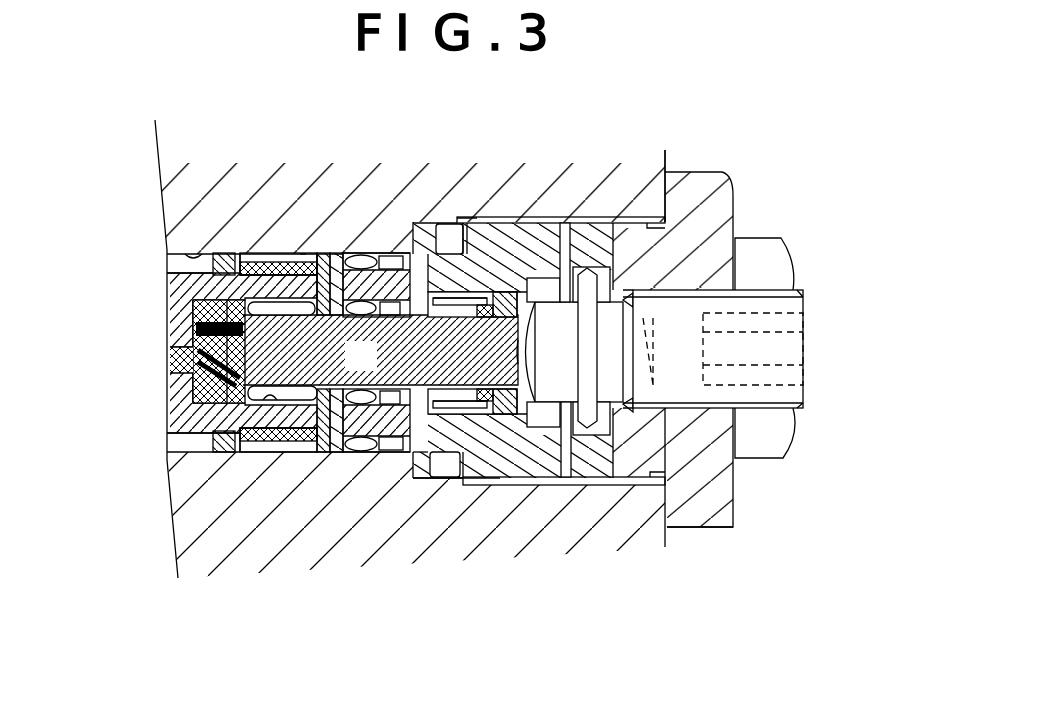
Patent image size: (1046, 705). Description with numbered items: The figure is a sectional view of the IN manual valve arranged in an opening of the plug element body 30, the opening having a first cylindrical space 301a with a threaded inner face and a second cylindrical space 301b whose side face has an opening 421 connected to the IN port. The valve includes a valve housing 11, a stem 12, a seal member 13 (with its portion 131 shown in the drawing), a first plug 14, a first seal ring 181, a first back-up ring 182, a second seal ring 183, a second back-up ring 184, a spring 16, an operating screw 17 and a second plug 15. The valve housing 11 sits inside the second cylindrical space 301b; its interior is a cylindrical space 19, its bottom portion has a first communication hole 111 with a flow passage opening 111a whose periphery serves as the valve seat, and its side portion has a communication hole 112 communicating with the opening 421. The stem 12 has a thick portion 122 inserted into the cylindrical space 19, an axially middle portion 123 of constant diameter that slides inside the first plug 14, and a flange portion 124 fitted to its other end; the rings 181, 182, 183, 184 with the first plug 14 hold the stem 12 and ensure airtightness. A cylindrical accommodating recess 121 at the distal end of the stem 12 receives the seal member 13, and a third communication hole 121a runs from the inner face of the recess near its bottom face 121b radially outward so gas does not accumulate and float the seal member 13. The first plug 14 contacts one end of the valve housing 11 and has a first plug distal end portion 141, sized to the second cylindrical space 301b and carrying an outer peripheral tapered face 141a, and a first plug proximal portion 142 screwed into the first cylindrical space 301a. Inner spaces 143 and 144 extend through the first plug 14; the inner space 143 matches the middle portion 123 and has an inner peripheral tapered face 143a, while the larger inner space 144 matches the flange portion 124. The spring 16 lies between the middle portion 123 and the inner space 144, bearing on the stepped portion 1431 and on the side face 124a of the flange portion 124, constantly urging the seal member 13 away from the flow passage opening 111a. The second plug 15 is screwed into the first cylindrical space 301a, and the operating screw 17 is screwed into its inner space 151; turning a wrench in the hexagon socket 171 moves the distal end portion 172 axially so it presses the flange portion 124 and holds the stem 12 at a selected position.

The valve housing 11 is at (205, 460).
The first communication hole 111 is at (182, 353).
The flow passage opening 111a is at (182, 348).
The communication hole 112 is at (320, 254).
The stem 12 is at (375, 370).
The accommodating recess 121 is at (272, 460).
The third communication hole 121a is at (172, 301).
The bottom face 121b is at (172, 331).
The thick portion 122 is at (170, 271).
The middle portion 123 is at (168, 262).
The flange portion 124 is at (567, 485).
The side face 124a is at (530, 485).
The seal member 13 is at (175, 399).
The seal lip 131 is at (173, 377).
The first plug 14 is at (528, 220).
The first plug distal end portion 141 is at (392, 253).
The outer peripheral tapered face 141a is at (372, 248).
The first plug proximal portion 142 is at (565, 223).
The inner space 143 is at (466, 470).
The inner peripheral tapered face 143a is at (430, 235).
The stepped portion 1431 is at (468, 470).
The inner space 144 is at (468, 216).
The second plug 15 is at (700, 168).
The inner space 151 is at (697, 410).
The spring 16 is at (480, 470).
The operating screw 17 is at (527, 342).
The hexagon socket 171 is at (775, 391).
The distal end portion 172 is at (737, 284).
The first seal ring 181 is at (360, 460).
The first back-up ring 182 is at (432, 470).
The second seal ring 183 is at (440, 470).
The second back-up ring 184 is at (460, 475).
The cylindrical space 19 is at (322, 460).
The plug element body 30 is at (195, 168).
The first cylindrical space 301a is at (603, 188).
The second cylindrical space 301b is at (193, 259).
The opening 421 is at (303, 245).